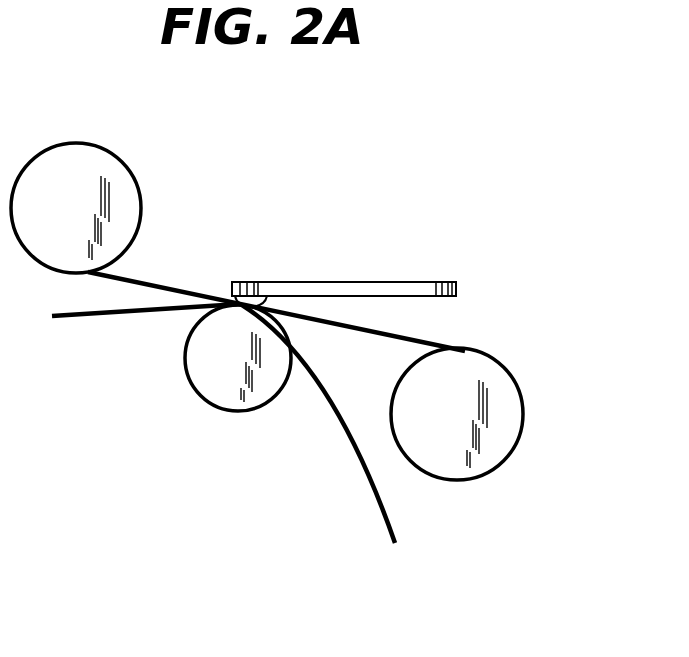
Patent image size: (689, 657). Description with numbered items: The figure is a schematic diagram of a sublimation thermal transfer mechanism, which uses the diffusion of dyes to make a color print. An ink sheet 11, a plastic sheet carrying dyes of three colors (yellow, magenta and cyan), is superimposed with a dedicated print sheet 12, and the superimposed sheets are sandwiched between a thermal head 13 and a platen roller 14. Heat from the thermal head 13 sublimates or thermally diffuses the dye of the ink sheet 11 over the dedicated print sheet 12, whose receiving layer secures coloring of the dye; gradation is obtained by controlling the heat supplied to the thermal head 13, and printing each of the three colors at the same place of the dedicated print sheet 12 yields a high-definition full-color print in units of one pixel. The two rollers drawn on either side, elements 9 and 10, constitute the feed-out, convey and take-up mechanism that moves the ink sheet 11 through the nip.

The feed-out/convey/take-up mechanism element 9 is at (139, 178).
The feed-out/convey/take-up mechanism element 10 is at (505, 366).
The ink sheet 11 is at (140, 283).
The dedicated print sheet 12 is at (368, 468).
The thermal head 13 is at (393, 281).
The platen roller 14 is at (185, 369).